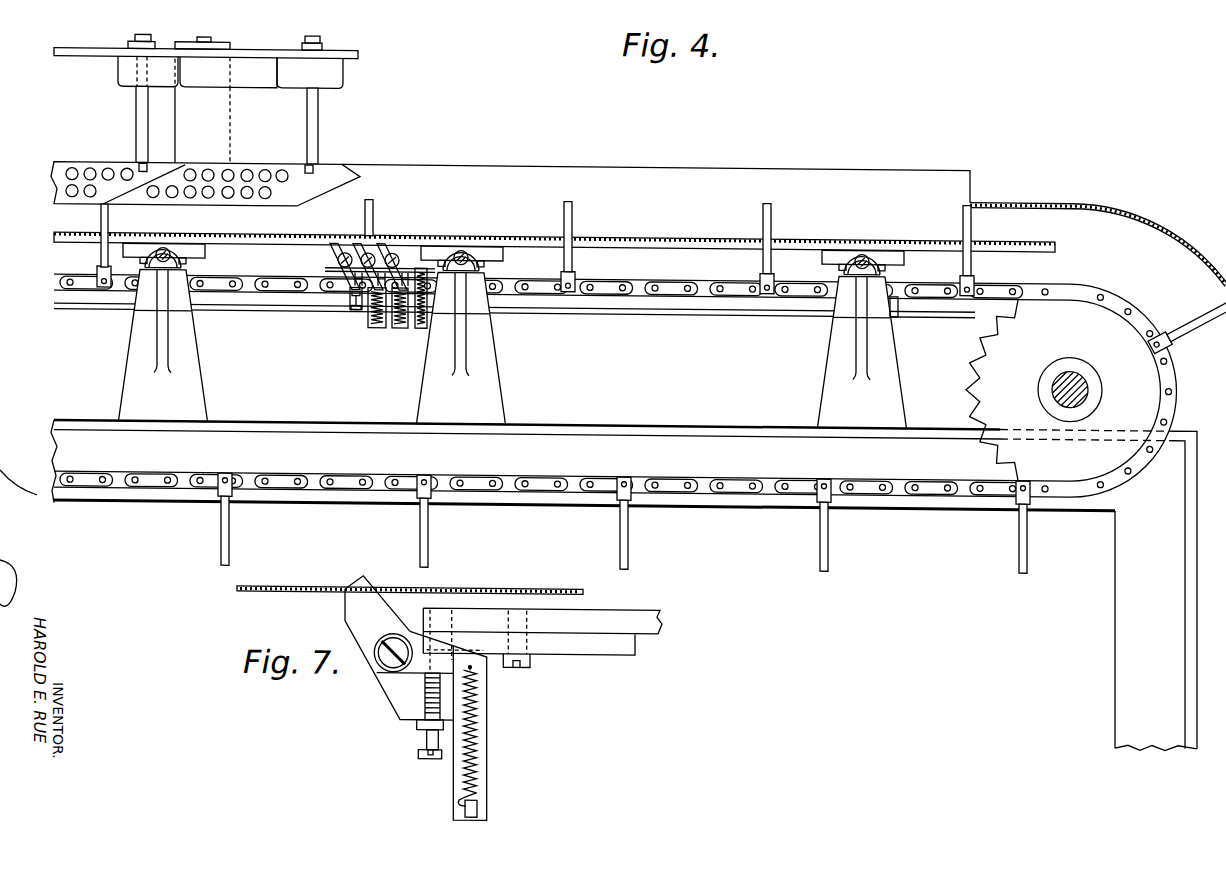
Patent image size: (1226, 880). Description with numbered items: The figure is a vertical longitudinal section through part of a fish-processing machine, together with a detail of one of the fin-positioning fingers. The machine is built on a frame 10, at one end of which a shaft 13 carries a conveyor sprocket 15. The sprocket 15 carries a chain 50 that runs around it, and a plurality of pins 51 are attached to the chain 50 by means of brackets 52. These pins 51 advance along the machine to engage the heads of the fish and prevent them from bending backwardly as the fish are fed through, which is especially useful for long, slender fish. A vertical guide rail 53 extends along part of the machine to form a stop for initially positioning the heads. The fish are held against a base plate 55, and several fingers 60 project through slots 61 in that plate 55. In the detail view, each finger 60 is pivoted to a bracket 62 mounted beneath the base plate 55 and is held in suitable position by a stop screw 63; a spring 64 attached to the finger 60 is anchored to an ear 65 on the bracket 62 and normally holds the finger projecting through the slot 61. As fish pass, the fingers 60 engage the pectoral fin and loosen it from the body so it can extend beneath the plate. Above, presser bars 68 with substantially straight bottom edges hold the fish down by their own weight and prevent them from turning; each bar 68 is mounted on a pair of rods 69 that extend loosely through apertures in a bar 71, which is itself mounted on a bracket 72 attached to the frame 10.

In FIG. 4, the frame 10 is at (650, 418).
In FIG. 4, the shaft 13 is at (1071, 374).
In FIG. 4, the conveyor sprocket 15 is at (968, 367).
In FIG. 4, the chain 50 is at (697, 273).
In FIG. 4, the pin 51 is at (374, 196).
In FIG. 4, the bracket 52 is at (565, 290).
In FIG. 4, the vertical guide rail 53 is at (766, 161).
In FIG. 4, the base plate 55 is at (554, 242).
In FIG. 7, the base plate 55 is at (295, 587).
In FIG. 4, the finger 60 is at (420, 262).
In FIG. 7, the finger 60 is at (367, 597).
In FIG. 7, the slot 61 is at (343, 589).
In FIG. 4, the bracket 62 is at (350, 290).
In FIG. 7, the bracket 62 is at (395, 692).
In FIG. 4, the stop screw 63 is at (357, 306).
In FIG. 7, the stop screw 63 is at (424, 742).
In FIG. 4, the spring 64 is at (378, 322).
In FIG. 7, the spring 64 is at (478, 718).
In FIG. 4, the ear 65 is at (377, 327).
In FIG. 7, the ear 65 is at (478, 808).
In FIG. 4, the presser bar 68 is at (100, 162).
In FIG. 4, the rod 69 is at (136, 109).
In FIG. 4, the bar 71 is at (262, 51).
In FIG. 4, the bracket 72 is at (224, 46).